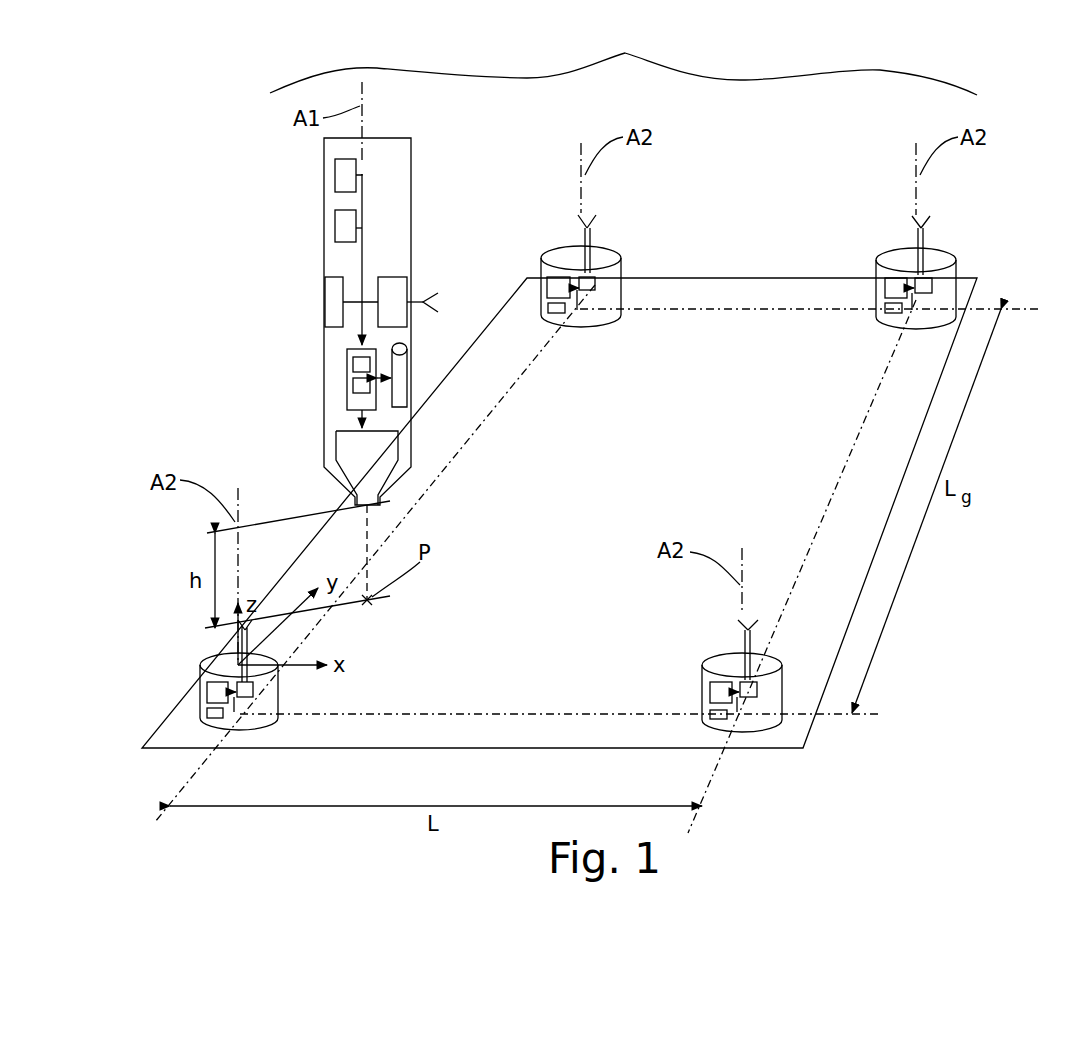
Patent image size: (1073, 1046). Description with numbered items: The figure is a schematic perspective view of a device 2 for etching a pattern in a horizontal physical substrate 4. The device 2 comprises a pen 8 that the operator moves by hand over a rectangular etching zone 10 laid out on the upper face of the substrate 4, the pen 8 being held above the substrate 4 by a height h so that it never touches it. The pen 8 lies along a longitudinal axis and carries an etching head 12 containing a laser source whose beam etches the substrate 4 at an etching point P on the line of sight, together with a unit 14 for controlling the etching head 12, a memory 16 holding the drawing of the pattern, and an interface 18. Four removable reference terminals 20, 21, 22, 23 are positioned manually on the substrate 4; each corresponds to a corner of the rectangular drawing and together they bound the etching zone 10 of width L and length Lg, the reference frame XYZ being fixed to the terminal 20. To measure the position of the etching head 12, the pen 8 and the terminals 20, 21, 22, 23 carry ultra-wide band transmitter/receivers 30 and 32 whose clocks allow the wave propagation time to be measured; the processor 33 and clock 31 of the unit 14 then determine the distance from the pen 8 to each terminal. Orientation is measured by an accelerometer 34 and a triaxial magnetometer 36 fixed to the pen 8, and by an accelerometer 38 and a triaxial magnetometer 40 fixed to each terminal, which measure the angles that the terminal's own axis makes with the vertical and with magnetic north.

The device 2 is at (623, 63).
The substrate 4 is at (818, 718).
The pen 8 is at (413, 148).
The etching zone 10 is at (722, 305).
The etching head 12 is at (357, 457).
The unit for controlling the etching head 14 is at (348, 398).
The memory 16 is at (402, 368).
The interface 18 is at (330, 318).
The reference terminal 20 is at (202, 678).
The reference terminal 21 is at (783, 673).
The reference terminal 22 is at (958, 252).
The reference terminal 23 is at (637, 255).
The electromagnetic wave transmitter/receiver 30 is at (397, 287).
The clock 31 is at (355, 382).
The electromagnetic wave transmitter/receiver 32 is at (590, 285).
The processor 33 is at (355, 360).
The accelerometer 34 is at (343, 228).
The magnetometer 36 is at (343, 170).
The accelerometer 38 is at (560, 308).
The magnetometer 40 is at (558, 287).